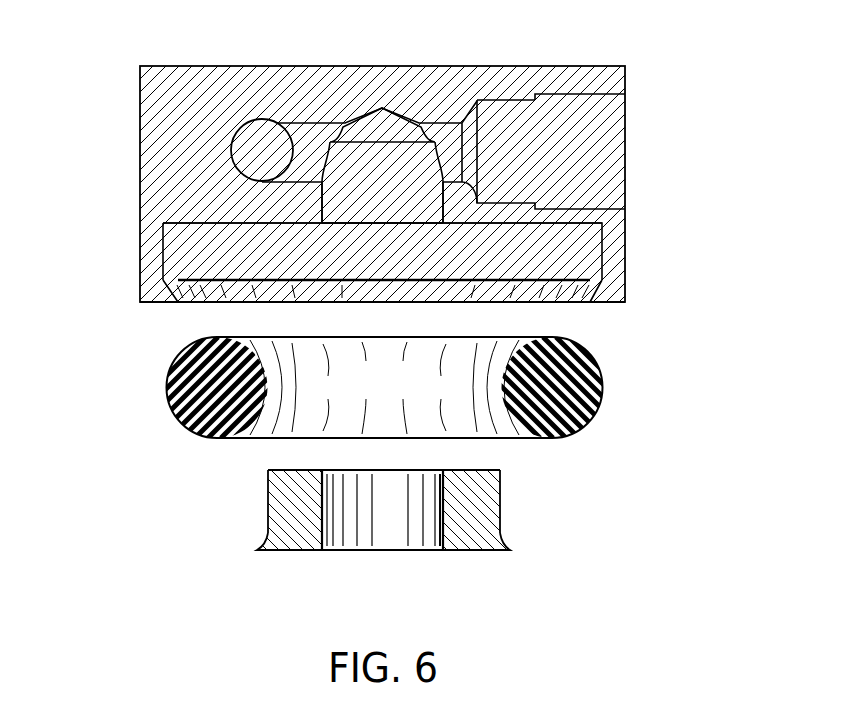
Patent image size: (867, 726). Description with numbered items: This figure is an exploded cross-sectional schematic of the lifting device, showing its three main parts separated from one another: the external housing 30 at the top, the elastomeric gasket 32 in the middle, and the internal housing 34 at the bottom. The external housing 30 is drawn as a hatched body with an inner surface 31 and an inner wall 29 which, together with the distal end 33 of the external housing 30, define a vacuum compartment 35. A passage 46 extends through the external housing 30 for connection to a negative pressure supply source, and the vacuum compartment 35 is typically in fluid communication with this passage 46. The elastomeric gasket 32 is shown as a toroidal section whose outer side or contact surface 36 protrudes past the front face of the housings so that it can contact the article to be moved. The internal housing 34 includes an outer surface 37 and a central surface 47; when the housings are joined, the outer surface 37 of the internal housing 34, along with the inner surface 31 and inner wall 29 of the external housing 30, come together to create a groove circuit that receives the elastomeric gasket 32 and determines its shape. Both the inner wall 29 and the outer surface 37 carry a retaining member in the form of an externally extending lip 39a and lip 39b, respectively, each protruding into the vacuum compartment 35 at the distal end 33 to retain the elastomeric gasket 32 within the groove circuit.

The external housing 30 is at (150, 140).
The passage 46 is at (625, 150).
The inner wall 29 is at (163, 246).
The retaining member 39a is at (172, 282).
The vacuum compartment 35 is at (398, 266).
The inner surface 31 is at (478, 224).
The distal end 33 is at (152, 303).
The elastomeric gasket 32 is at (166, 388).
The contact surface 36 is at (216, 440).
The outer surface 37 is at (268, 497).
The internal housing 34 is at (300, 535).
The retaining member 39b is at (259, 538).
The central surface 47 is at (400, 549).